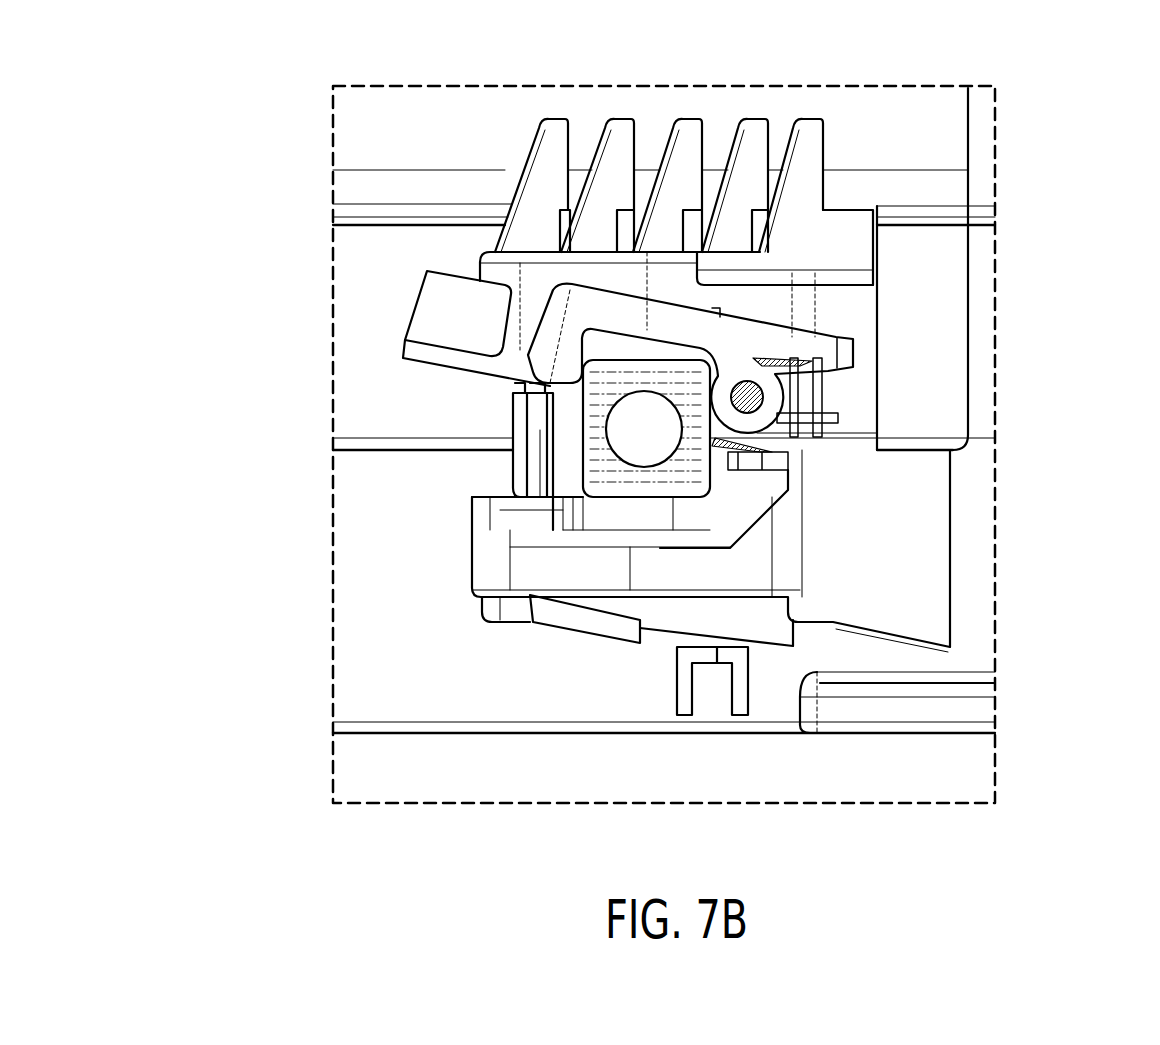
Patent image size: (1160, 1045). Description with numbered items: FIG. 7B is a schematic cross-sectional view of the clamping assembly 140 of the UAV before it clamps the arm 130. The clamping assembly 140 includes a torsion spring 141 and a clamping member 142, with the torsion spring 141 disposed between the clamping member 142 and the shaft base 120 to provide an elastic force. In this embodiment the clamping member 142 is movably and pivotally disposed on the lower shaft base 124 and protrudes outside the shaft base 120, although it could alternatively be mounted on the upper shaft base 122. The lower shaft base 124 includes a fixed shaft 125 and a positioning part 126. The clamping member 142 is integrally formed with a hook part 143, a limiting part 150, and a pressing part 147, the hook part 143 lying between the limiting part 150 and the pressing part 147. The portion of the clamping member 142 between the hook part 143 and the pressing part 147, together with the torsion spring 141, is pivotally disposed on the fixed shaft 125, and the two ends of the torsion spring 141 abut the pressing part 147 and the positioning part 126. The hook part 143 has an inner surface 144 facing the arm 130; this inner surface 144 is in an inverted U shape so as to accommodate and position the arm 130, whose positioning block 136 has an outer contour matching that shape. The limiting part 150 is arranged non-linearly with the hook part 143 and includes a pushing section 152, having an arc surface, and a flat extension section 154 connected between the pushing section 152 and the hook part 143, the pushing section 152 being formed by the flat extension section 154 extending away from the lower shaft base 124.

The shaft base 120 is at (661, 410).
The upper shaft base 122 is at (850, 303).
The lower shaft base 124 is at (523, 465).
The fixed shaft 125 is at (765, 395).
The positioning part 126 is at (775, 460).
The arm 130 is at (826, 610).
The positioning block 136 is at (621, 480).
The clamping assembly 140 is at (633, 262).
The torsion spring 141 is at (853, 356).
The clamping member 142 is at (443, 264).
The hook part 143 is at (656, 325).
The inner surface 144 is at (632, 336).
The pressing part 147 is at (853, 345).
The limiting part 150 is at (332, 342).
The pushing section 152 is at (435, 323).
The flat extension section 154 is at (452, 360).